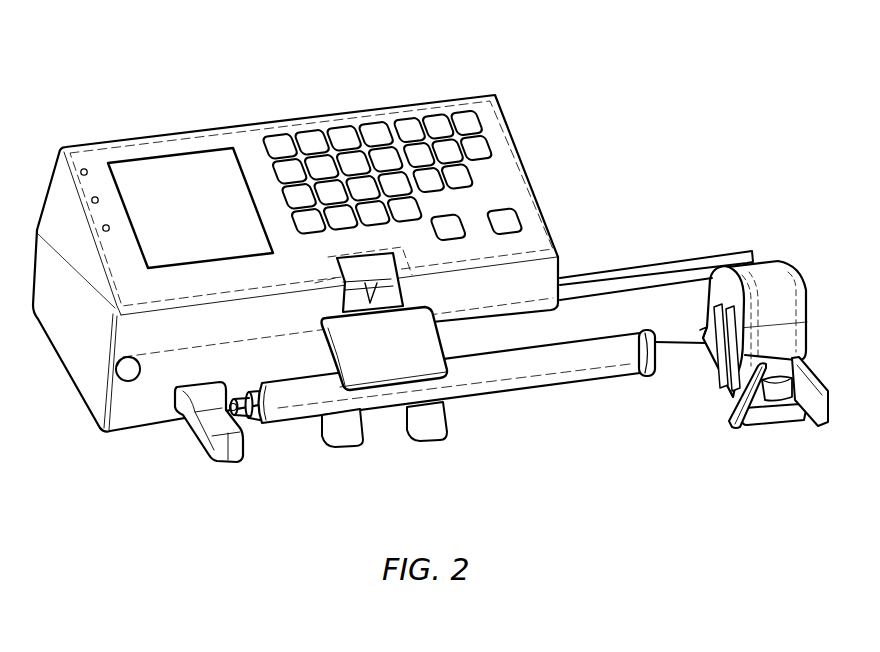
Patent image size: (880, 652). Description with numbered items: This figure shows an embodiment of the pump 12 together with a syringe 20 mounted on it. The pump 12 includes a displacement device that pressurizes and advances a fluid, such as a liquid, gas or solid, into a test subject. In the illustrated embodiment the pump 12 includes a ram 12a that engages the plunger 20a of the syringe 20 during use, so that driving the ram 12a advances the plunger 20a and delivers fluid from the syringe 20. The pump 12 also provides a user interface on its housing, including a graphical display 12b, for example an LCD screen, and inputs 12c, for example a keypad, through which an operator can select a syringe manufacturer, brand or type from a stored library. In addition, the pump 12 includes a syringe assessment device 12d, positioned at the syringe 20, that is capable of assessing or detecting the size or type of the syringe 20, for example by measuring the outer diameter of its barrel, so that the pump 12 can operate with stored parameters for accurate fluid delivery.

The pump 12 is at (225, 62).
The ram 12a is at (725, 284).
The graphical display 12b is at (190, 208).
The inputs 12c is at (373, 135).
The syringe assessment device 12d is at (381, 347).
The syringe 20 is at (287, 415).
The plunger 20a is at (647, 381).